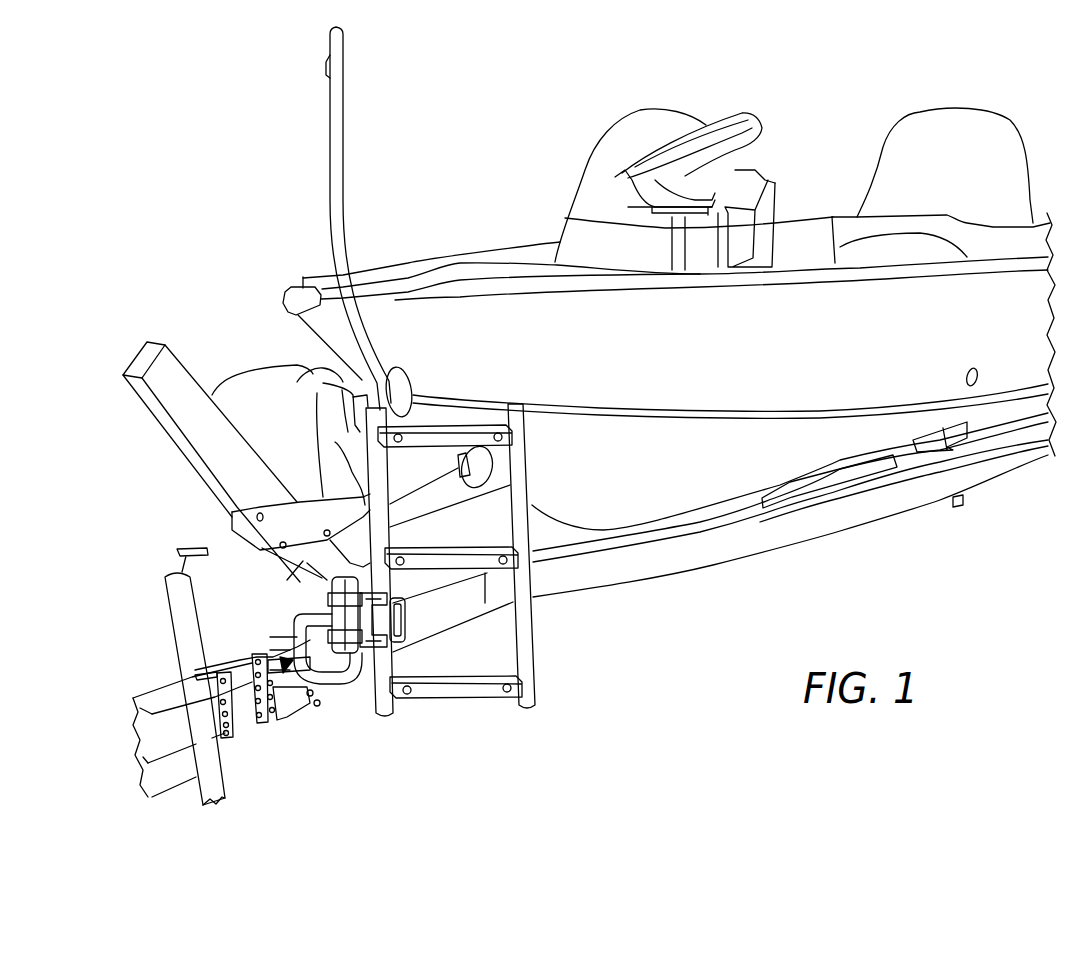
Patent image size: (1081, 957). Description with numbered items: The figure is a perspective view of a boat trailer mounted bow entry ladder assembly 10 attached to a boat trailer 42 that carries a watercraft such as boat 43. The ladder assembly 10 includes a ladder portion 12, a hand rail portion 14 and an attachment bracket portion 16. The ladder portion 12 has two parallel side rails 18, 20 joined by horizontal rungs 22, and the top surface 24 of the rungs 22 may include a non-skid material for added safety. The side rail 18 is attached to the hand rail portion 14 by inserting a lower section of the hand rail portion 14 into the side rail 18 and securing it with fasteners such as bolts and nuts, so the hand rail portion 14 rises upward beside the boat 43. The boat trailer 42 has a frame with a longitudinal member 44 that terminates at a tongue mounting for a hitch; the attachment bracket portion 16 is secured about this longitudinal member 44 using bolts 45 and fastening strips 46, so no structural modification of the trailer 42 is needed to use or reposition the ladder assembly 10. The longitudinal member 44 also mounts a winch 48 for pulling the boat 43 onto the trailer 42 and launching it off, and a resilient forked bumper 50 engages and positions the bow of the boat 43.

The ladder assembly 10 is at (570, 644).
The ladder portion 12 is at (538, 618).
The hand rail portion 14 is at (346, 104).
The attachment bracket portion 16 is at (327, 698).
The side rail 18 is at (392, 708).
The side rail 20 is at (537, 698).
The rungs 22 is at (457, 560).
The top surface 24 is at (429, 547).
The boat trailer 42 is at (712, 565).
The boat 43 is at (447, 277).
The longitudinal member 44 is at (248, 718).
The bolts 45 is at (205, 626).
The fastening strips 46 is at (254, 660).
The winch 48 is at (236, 393).
The forked bumper 50 is at (414, 383).